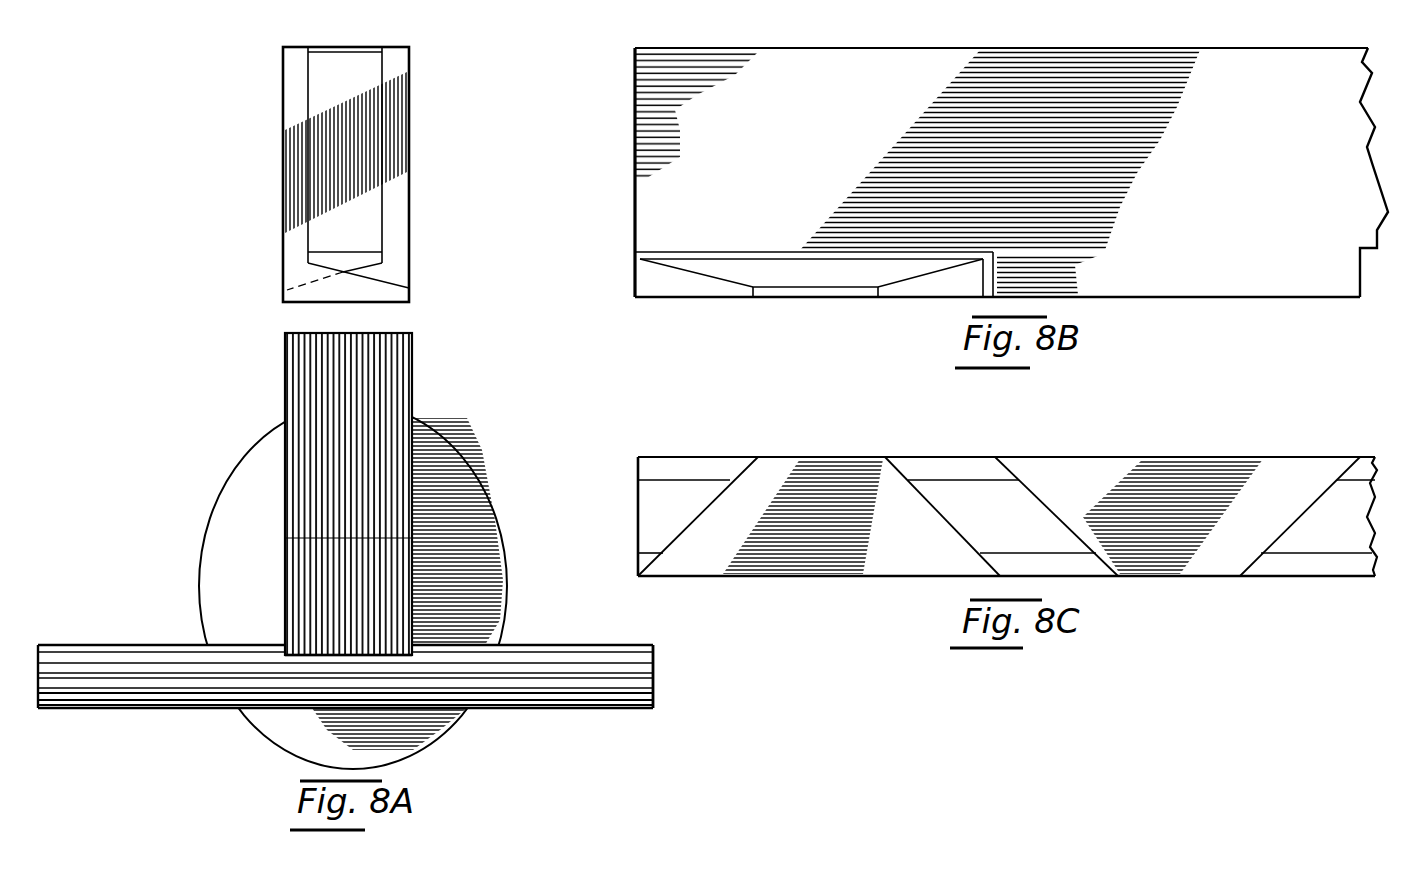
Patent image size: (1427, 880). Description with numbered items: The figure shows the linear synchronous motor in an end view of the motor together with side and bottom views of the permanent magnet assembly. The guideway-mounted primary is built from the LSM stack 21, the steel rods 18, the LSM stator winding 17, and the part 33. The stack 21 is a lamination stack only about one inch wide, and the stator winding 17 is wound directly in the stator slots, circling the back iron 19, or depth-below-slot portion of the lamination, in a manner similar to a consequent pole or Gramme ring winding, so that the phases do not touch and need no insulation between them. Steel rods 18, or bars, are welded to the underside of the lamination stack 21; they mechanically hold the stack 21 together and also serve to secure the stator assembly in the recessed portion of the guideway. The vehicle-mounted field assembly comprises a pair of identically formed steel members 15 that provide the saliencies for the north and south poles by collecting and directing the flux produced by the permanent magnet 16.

In FIG. 8A, the steel member 15 is at (282, 181).
In FIG. 8B, the steel member 15 is at (645, 203).
In FIG. 8C, the steel member 15 is at (705, 465).
In FIG. 8A, the permanent magnet 16 is at (348, 63).
In FIG. 8C, the permanent magnet 16 is at (642, 528).
In FIG. 8A, the LSM stator winding 17 is at (210, 490).
In FIG. 8A, the steel rod 18 is at (167, 647).
In FIG. 8A, the back iron 19 is at (303, 605).
In FIG. 8A, the LSM stack 21 is at (285, 373).
In FIG. 8A, the LSM primary part 33 is at (303, 657).